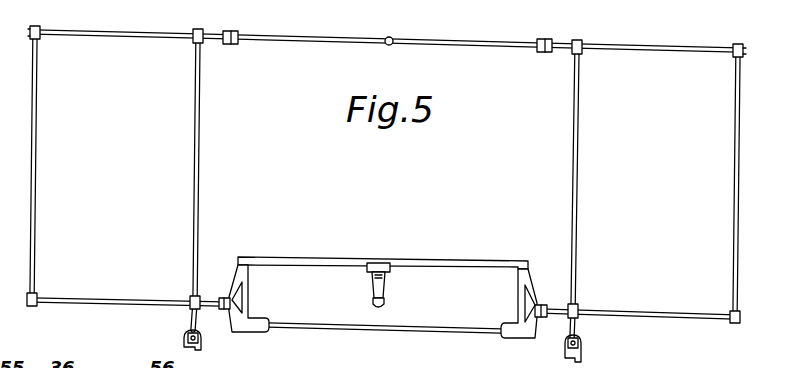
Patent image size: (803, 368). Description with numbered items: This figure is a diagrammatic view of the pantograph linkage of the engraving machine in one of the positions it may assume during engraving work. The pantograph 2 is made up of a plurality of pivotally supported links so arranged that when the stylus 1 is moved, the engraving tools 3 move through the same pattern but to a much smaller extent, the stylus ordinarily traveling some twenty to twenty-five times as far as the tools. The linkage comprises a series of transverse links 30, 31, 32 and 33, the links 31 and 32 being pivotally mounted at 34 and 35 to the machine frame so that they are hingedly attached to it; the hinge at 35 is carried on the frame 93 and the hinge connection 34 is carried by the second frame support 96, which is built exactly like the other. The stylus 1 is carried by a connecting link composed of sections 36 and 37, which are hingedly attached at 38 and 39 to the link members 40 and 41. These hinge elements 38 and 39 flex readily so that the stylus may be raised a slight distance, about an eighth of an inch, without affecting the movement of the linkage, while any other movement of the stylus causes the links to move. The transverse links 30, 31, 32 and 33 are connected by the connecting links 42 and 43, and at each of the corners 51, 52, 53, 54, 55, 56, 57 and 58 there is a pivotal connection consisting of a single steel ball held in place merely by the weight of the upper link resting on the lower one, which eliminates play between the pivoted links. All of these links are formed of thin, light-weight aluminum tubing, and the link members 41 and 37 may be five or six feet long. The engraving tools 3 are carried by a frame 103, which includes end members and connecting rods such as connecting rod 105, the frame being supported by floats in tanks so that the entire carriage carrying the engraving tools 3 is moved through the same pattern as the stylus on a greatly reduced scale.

The stylus 1 is at (392, 39).
The pantograph 2 is at (583, 118).
The engraving tools 3 is at (388, 305).
The transverse link 30 is at (38, 155).
The transverse link 31 is at (200, 160).
The transverse link 32 is at (573, 171).
The transverse link 33 is at (735, 177).
The pivotal mounting 34 is at (188, 334).
The pivotal mounting 35 is at (582, 341).
The connecting link section 36 is at (133, 33).
The connecting link section 37 is at (652, 50).
The hinge element 38 is at (240, 46).
The hinge element 39 is at (545, 53).
The link member 40 is at (313, 37).
The link member 41 is at (467, 42).
The connecting link 42 is at (92, 300).
The connecting link 43 is at (650, 313).
The corner pivotal connection 51 is at (730, 315).
The corner pivotal connection 52 is at (578, 308).
The corner pivotal connection 53 is at (192, 300).
The corner pivotal connection 54 is at (36, 298).
The corner pivotal connection 55 is at (40, 30).
The corner pivotal connection 56 is at (203, 32).
The corner pivotal connection 57 is at (582, 46).
The corner pivotal connection 58 is at (744, 50).
The frame 93 is at (565, 354).
The second frame support 96 is at (203, 343).
The frame 103 is at (410, 260).
The connecting rod 105 is at (403, 334).